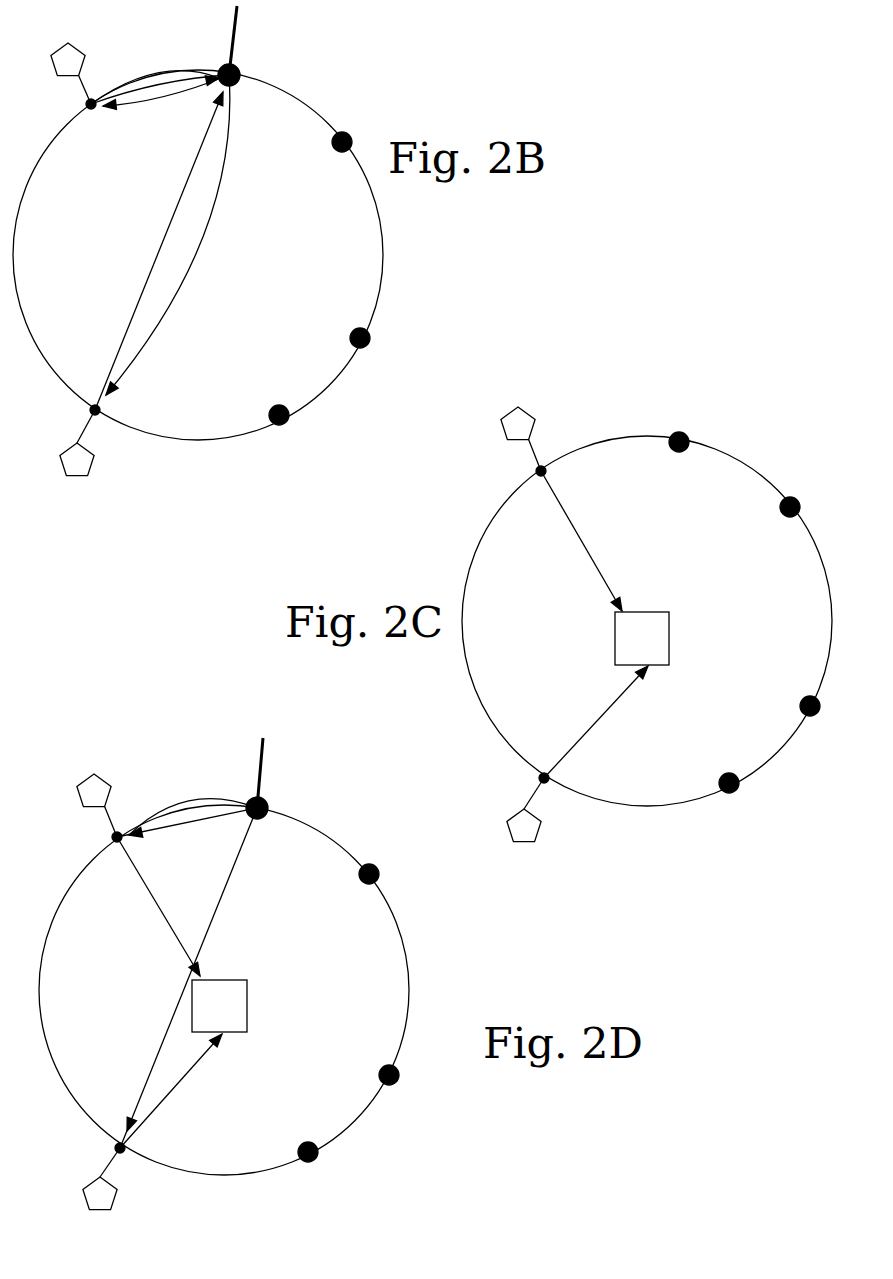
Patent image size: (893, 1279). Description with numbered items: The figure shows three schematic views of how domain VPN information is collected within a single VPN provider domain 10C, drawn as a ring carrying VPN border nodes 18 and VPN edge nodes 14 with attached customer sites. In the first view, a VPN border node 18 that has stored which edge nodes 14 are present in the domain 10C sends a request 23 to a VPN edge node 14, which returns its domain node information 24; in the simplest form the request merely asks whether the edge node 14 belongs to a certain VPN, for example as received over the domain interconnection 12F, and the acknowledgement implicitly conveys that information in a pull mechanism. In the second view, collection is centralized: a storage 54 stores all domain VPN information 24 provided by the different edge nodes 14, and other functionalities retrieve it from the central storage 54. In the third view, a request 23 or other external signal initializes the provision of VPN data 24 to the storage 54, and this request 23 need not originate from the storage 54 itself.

In FIG. 2B, the VPN provider domain 10C is at (162, 438).
In FIG. 2C, the VPN provider domain 10C is at (611, 803).
In FIG. 2D, the VPN provider domain 10C is at (183, 1172).
In FIG. 2B, the interdomain data connection 12F is at (236, 66).
In FIG. 2D, the interdomain data connection 12F is at (264, 797).
In FIG. 2B, the VPN edge node 14 is at (91, 110).
In FIG. 2C, the VPN edge node 14 is at (541, 478).
In FIG. 2D, the VPN edge node 14 is at (117, 844).
In FIG. 2B, the VPN border node 18 is at (220, 72).
In FIG. 2C, the VPN border node 18 is at (671, 436).
In FIG. 2D, the VPN border node 18 is at (248, 806).
In FIG. 2B, the request 23 is at (143, 108).
In FIG. 2D, the request 23 is at (177, 803).
In FIG. 2B, the domain node information 24 is at (138, 90).
In FIG. 2C, the domain node information 24 is at (589, 553).
In FIG. 2D, the domain node information 24 is at (161, 910).
In FIG. 2C, the storage 54 is at (668, 667).
In FIG. 2D, the storage 54 is at (243, 1034).